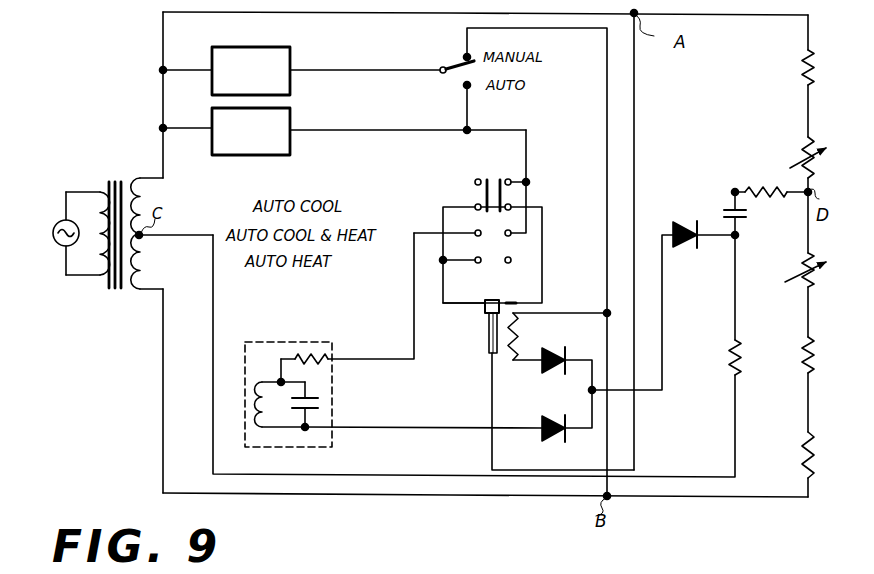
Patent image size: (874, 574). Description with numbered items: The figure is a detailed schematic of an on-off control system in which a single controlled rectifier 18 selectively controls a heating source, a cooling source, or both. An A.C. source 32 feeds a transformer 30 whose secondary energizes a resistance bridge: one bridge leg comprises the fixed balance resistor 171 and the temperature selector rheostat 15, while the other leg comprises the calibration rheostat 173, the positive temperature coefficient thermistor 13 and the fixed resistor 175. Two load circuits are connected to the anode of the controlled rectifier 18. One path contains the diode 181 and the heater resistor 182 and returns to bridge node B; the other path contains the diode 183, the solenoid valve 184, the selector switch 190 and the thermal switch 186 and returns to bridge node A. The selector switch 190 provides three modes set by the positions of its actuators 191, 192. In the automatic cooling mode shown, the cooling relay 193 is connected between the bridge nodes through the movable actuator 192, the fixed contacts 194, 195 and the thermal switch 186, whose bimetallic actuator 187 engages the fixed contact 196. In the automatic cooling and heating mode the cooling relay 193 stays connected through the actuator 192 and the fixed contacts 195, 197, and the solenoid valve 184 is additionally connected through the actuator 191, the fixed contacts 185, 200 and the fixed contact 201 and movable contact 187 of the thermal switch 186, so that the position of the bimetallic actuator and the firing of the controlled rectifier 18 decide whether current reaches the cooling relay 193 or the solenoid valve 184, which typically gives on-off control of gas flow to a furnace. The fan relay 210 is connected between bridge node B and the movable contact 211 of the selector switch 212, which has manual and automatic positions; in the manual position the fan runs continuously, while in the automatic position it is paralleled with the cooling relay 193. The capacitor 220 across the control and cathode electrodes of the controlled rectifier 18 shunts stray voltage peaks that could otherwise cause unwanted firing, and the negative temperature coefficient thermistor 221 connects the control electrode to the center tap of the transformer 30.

The transformer 30 is at (113, 178).
The AC power source 32 is at (60, 220).
The fan relay 210 is at (290, 48).
The cooling relay 193 is at (290, 110).
The selector switch 212 is at (456, 66).
The movable contact 211 is at (442, 74).
The fixed contact 194 is at (509, 178).
The movable actuator 192 is at (500, 180).
The switch actuator 191 is at (484, 190).
The fixed contact 195 is at (512, 207).
The fixed contact 197 is at (512, 233).
The selector switch 190 is at (517, 259).
The fixed contact 185 is at (475, 233).
The fixed contact 200 is at (440, 260).
The fixed contact 196 is at (517, 283).
The fixed contact 201 is at (468, 305).
The bimetallic actuator 187 is at (488, 330).
The thermal switch 186 is at (488, 352).
The heater resistor 182 is at (513, 362).
The diode 181 is at (548, 350).
The diode 183 is at (548, 442).
The solenoid valve 184 is at (322, 389).
The controlled rectifier 18 is at (682, 224).
The capacitor 220 is at (746, 212).
The negative temperature coefficient thermistor 221 is at (735, 346).
The fixed balance resistor 171 is at (806, 68).
The temperature selector rheostat 15 is at (806, 160).
The calibration rheostat 173 is at (806, 272).
The positive temperature coefficient thermistor 13 is at (806, 340).
The fixed resistor 175 is at (806, 452).